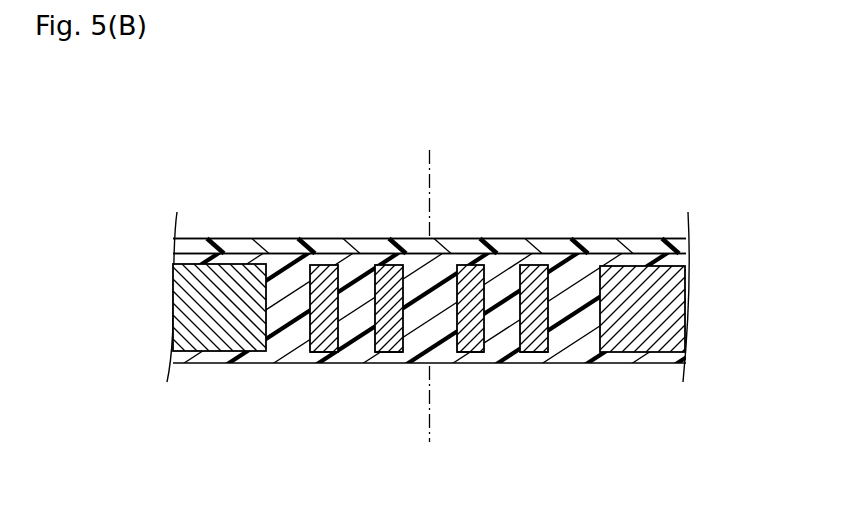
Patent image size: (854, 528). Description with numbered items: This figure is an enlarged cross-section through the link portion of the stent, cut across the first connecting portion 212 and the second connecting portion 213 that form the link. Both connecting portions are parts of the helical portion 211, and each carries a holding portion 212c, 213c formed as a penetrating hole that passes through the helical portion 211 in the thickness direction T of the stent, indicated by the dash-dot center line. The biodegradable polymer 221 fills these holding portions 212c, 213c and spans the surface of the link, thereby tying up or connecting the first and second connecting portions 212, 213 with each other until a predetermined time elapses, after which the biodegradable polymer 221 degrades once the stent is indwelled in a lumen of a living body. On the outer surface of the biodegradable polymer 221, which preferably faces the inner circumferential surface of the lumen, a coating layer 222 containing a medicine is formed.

The helical portion 211 is at (212, 264).
The first connecting portion 212 is at (527, 264).
The second connecting portion 213 is at (386, 264).
The biodegradable polymer 221 is at (283, 251).
The coating layer 222 is at (555, 250).
The holding portion 212c is at (501, 352).
The holding portion 213c is at (354, 352).
The thickness direction T is at (431, 168).